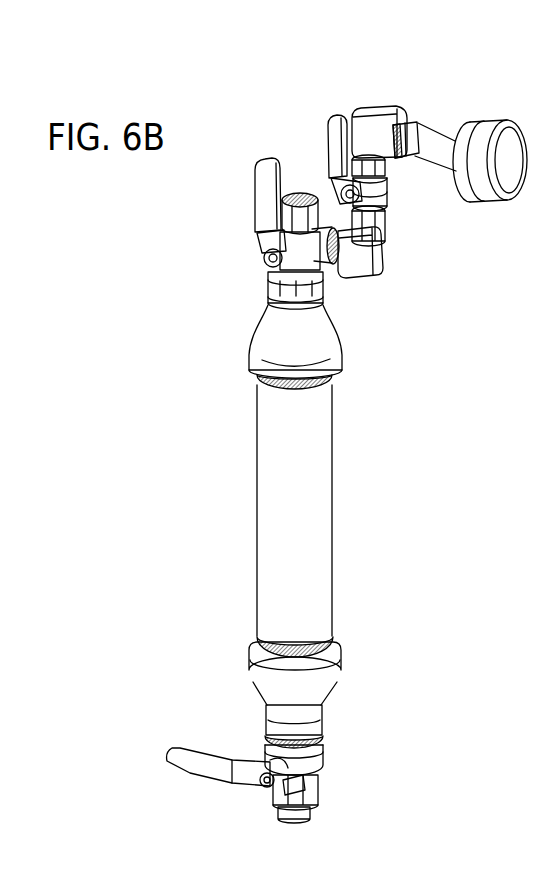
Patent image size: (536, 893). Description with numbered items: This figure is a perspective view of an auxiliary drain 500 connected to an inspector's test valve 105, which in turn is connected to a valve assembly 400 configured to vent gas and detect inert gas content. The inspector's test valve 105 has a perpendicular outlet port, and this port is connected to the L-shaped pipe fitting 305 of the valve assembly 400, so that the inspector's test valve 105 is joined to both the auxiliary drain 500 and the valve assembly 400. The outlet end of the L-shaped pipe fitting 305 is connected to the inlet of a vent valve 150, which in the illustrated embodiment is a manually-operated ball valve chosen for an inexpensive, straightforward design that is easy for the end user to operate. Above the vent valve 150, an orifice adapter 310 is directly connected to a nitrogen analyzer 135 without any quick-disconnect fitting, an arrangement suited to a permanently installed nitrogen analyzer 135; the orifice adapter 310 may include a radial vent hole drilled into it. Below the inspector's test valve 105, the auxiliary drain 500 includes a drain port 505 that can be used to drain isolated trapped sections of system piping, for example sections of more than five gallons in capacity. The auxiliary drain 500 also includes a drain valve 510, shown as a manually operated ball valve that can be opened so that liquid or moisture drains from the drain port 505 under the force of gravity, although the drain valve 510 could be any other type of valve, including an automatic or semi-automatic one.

The valve assembly 400 is at (460, 81).
The orifice adapter 310 is at (413, 126).
The vent valve 150 is at (387, 185).
The nitrogen analyzer 135 is at (453, 188).
The L-shaped pipe fitting 305 is at (382, 268).
The inspector's test valve 105 is at (257, 238).
The auxiliary drain 500 is at (336, 497).
The drain valve 510 is at (323, 750).
The drain port 505 is at (300, 818).